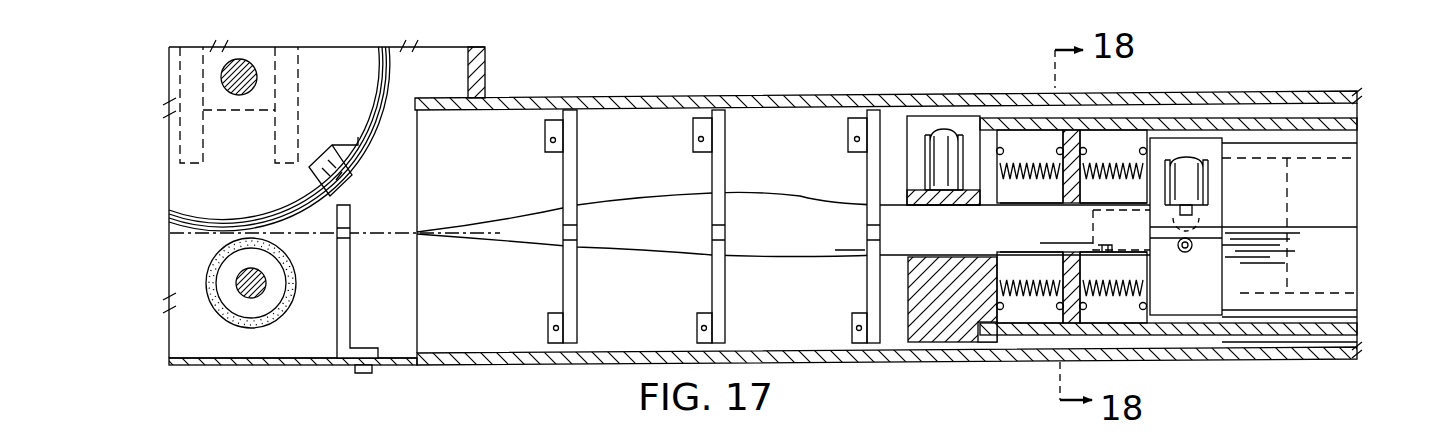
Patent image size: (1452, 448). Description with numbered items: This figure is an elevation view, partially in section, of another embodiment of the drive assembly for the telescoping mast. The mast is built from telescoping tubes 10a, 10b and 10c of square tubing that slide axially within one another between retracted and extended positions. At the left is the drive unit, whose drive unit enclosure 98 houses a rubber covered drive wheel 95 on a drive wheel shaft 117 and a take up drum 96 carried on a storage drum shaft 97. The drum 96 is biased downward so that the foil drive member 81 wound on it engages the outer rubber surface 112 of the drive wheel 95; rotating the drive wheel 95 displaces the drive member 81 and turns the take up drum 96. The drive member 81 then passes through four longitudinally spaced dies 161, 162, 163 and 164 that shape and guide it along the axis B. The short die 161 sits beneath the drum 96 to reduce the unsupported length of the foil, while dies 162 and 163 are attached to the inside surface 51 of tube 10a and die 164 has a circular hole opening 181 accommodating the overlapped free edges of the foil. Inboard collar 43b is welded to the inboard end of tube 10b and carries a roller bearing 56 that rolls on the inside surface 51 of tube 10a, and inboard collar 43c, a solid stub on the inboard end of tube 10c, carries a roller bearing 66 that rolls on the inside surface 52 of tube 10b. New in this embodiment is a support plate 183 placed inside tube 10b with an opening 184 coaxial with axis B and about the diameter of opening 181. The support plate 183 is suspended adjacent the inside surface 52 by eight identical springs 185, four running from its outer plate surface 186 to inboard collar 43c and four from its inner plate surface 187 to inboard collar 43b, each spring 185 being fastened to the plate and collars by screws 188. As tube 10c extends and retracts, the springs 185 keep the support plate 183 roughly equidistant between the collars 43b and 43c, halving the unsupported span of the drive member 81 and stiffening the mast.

The tube 10a is at (843, 95).
The tube 10b is at (1316, 122).
The tube 10c is at (1350, 153).
The inboard collar 43b is at (930, 325).
The inboard collar 43c is at (1203, 148).
The inside surface 51 is at (1352, 351).
The inside surface 52 is at (1352, 325).
The roller bearing 56 is at (943, 140).
The roller bearing 66 is at (1208, 191).
The drive member 81 is at (316, 246).
The drive wheel 95 is at (243, 331).
The take up drum 96 is at (195, 180).
The storage drum shaft 97 is at (248, 75).
The drive unit enclosure 98 is at (486, 62).
The outer rubber surface 112 is at (214, 306).
The drive wheel shaft 117 is at (250, 283).
The die 161 is at (336, 338).
The die 162 is at (579, 138).
The die 163 is at (728, 126).
The die 164 is at (865, 175).
The circular hole opening 181 is at (872, 253).
The support plate 183 is at (1087, 328).
The opening 184 is at (1078, 254).
The springs 185 is at (1106, 165).
The outer plate surface 186 is at (1087, 132).
The inner plate surface 187 is at (1058, 324).
The screws 188 is at (1057, 150).
The axis B is at (492, 234).